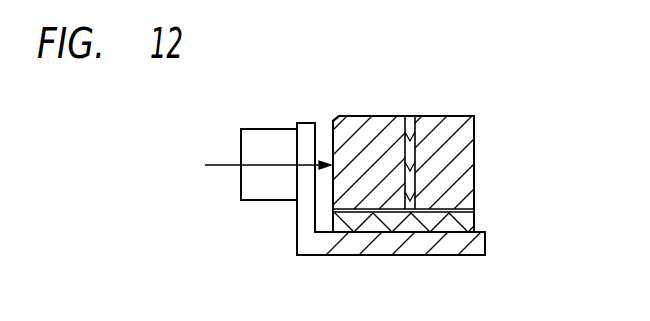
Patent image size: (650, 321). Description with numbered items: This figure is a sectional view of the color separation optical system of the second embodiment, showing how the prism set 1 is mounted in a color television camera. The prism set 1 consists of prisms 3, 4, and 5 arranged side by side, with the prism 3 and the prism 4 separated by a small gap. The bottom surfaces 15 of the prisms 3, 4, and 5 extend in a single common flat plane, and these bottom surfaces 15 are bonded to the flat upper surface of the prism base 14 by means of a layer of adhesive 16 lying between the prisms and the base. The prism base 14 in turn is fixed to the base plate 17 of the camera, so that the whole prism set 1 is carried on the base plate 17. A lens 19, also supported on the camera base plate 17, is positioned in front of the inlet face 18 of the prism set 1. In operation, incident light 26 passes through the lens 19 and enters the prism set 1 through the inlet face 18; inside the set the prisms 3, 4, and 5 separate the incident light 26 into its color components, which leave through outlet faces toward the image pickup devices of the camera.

The prism set 1 is at (470, 145).
The prism 3 is at (369, 118).
The prism 4 is at (410, 118).
The prism 5 is at (444, 118).
The prism base 14 is at (459, 233).
The bottom surfaces 15 is at (458, 206).
The adhesive 16 is at (475, 210).
The base plate 17 is at (304, 124).
The inlet face 18 is at (334, 121).
The lens 19 is at (266, 201).
The incident light 26 is at (271, 165).